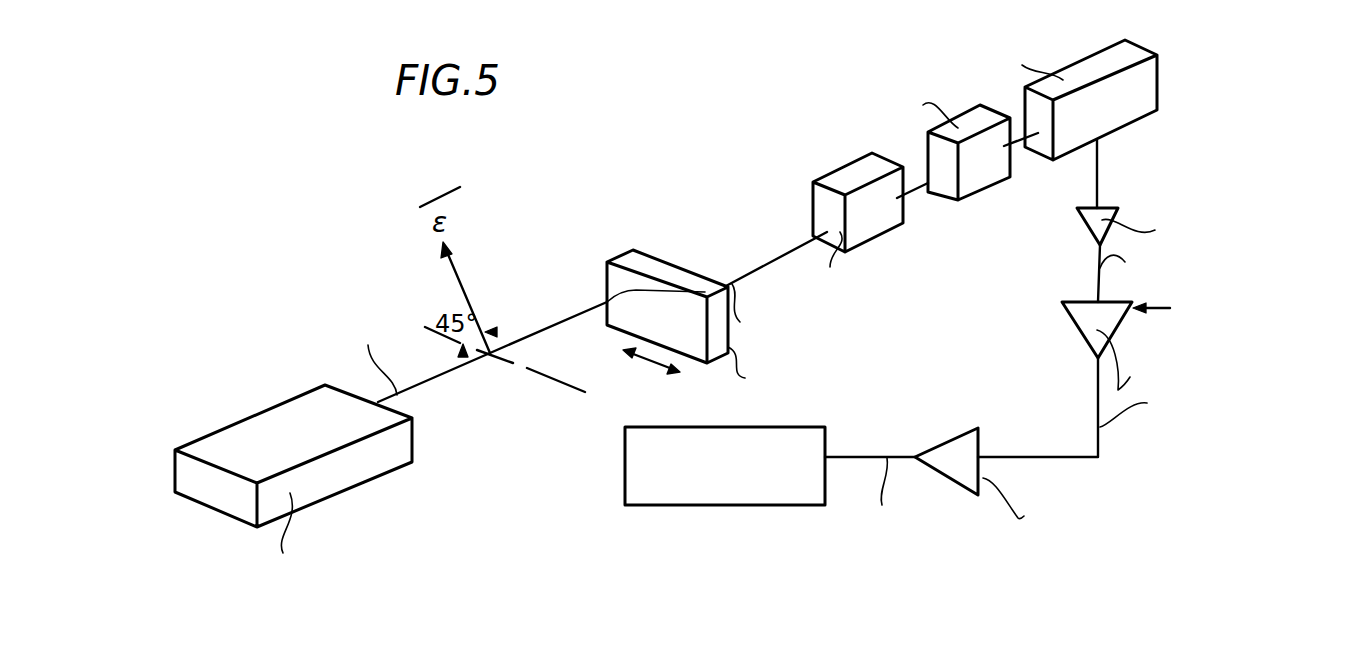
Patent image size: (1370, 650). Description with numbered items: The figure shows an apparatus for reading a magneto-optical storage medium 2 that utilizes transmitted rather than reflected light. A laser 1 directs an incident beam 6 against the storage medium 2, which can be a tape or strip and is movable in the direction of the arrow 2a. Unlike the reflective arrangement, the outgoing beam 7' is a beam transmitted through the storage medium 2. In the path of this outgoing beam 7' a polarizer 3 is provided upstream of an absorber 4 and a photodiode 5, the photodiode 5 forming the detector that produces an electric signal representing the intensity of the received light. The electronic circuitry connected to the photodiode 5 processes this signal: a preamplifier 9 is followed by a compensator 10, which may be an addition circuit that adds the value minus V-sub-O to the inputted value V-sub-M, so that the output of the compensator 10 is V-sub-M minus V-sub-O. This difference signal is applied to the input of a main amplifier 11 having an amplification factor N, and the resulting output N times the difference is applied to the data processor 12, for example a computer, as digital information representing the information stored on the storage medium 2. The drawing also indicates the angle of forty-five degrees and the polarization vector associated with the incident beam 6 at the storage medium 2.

The laser 1 is at (185, 490).
The magnetic storage medium 2 is at (613, 280).
The arrow 2a is at (643, 360).
The polarizer 3 is at (890, 218).
The absorber 4 is at (977, 175).
The photodiode 5 is at (1038, 140).
The incident beam 6 is at (437, 378).
The outgoing beam 7' is at (882, 236).
The preamplifier 9 is at (1080, 217).
The compensator 10 is at (1077, 318).
The main amplifier 11 is at (965, 440).
The data processor 12 is at (690, 507).